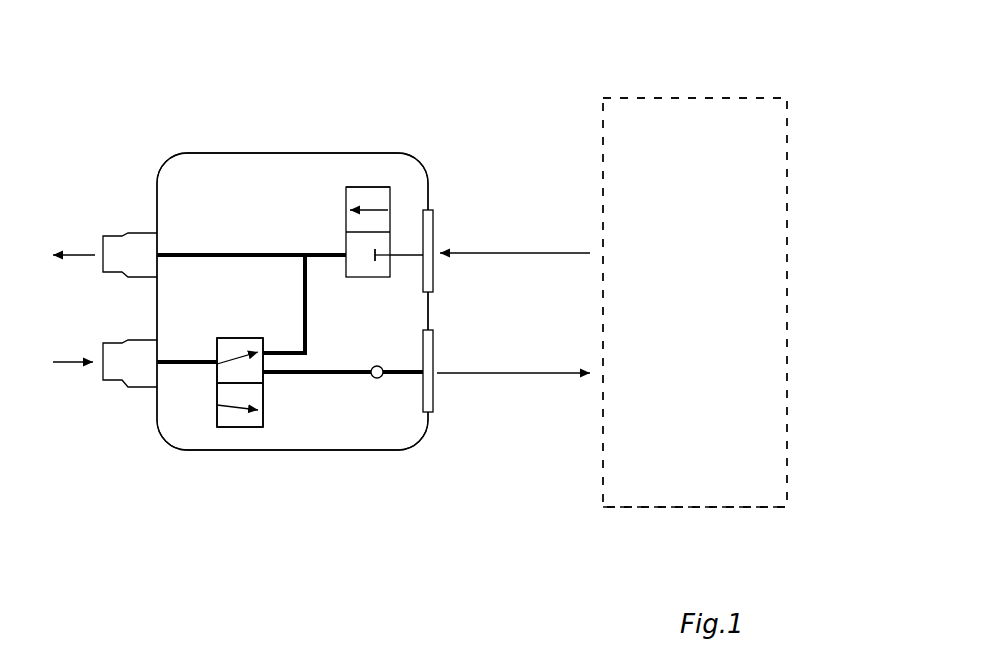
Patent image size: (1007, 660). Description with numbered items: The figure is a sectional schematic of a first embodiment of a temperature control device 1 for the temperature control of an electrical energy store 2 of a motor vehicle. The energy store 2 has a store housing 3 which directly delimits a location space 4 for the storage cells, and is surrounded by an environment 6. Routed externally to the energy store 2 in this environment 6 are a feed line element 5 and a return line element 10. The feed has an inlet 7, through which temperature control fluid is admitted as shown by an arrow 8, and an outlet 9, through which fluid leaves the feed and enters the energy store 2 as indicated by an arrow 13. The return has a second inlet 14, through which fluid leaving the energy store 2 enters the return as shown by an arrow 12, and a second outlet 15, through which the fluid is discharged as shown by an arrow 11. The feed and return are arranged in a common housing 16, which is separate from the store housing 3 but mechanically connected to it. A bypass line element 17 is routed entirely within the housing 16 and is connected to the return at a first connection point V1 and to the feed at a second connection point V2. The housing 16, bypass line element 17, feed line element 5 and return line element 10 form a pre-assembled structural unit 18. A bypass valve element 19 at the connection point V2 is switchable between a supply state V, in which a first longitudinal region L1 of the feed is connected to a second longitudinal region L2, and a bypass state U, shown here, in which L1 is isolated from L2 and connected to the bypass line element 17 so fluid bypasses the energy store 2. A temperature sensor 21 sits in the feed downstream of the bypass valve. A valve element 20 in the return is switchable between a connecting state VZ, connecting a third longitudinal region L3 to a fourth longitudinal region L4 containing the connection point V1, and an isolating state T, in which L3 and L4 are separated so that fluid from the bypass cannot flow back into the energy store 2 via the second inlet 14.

The temperature control device 1 is at (792, 90).
The electrical energy store 2 is at (776, 434).
The store housing 3 is at (637, 507).
The location space 4 is at (705, 321).
The feed line element 5 is at (317, 374).
The environment 6 is at (593, 89).
The inlet 7 is at (133, 375).
The arrow 8 is at (70, 364).
The outlet 9 is at (433, 398).
The return line element 10 is at (237, 252).
The arrow 11 is at (82, 252).
The arrow 12 is at (517, 253).
The arrow 13 is at (547, 375).
The second inlet 14 is at (433, 284).
The second outlet 15 is at (133, 240).
The housing 16 is at (207, 450).
The bypass line element 17 is at (305, 297).
The structural unit 18 is at (330, 452).
The bypass valve element 19 is at (235, 429).
The valve element 20 is at (382, 183).
The temperature sensor 21 is at (377, 380).
The first longitudinal region L1 is at (197, 360).
The second longitudinal region L2 is at (345, 370).
The third longitudinal region L3 is at (393, 253).
The fourth longitudinal region L4 is at (187, 252).
The supply state V is at (220, 427).
The first connection point V1 is at (305, 252).
The second connection point V2 is at (217, 405).
The connecting state VZ is at (370, 187).
The bypass state U is at (237, 338).
The isolating state T is at (383, 278).